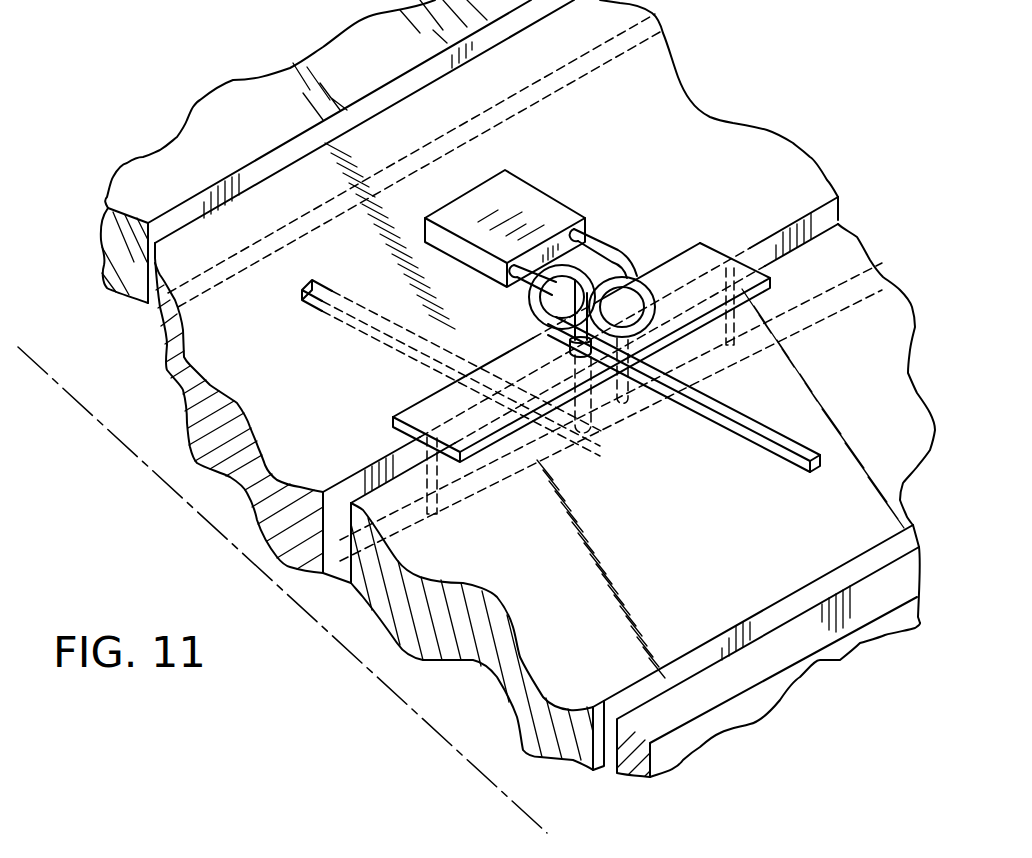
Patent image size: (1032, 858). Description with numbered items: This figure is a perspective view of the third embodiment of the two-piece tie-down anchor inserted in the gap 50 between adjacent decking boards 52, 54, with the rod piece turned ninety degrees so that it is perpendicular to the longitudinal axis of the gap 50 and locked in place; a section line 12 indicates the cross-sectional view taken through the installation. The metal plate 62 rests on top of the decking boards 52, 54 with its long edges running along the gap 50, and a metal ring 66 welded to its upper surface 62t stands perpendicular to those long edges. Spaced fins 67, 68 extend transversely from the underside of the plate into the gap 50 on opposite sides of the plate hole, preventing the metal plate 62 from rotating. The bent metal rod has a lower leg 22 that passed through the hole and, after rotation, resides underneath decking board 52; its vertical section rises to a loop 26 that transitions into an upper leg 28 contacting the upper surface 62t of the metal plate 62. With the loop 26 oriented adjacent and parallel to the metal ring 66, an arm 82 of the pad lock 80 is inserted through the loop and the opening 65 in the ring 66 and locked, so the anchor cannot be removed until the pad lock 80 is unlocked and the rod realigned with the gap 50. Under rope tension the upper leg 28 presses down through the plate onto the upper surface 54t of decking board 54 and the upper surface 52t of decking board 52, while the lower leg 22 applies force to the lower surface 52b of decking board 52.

The section line 12- 12 is at (573, 797).
The lower leg 22 is at (322, 308).
The loop 26 is at (545, 292).
The upper leg 28 is at (780, 455).
The gap 50 is at (840, 207).
The decking board 52 is at (215, 350).
The upper surface of decking board 52 52t is at (367, 388).
The lower surface of decking board 52 52b is at (183, 470).
The decking board 54 is at (548, 655).
The upper surface of decking board 54 54t is at (640, 506).
The metal plate 62 is at (480, 437).
The upper surface of metal plate 62t is at (712, 257).
The opening 65 is at (655, 368).
The metal ring 66 is at (645, 272).
The fin 67 is at (462, 485).
The fin 68 is at (703, 345).
The pad lock 80 is at (500, 180).
The arm 82 is at (593, 240).